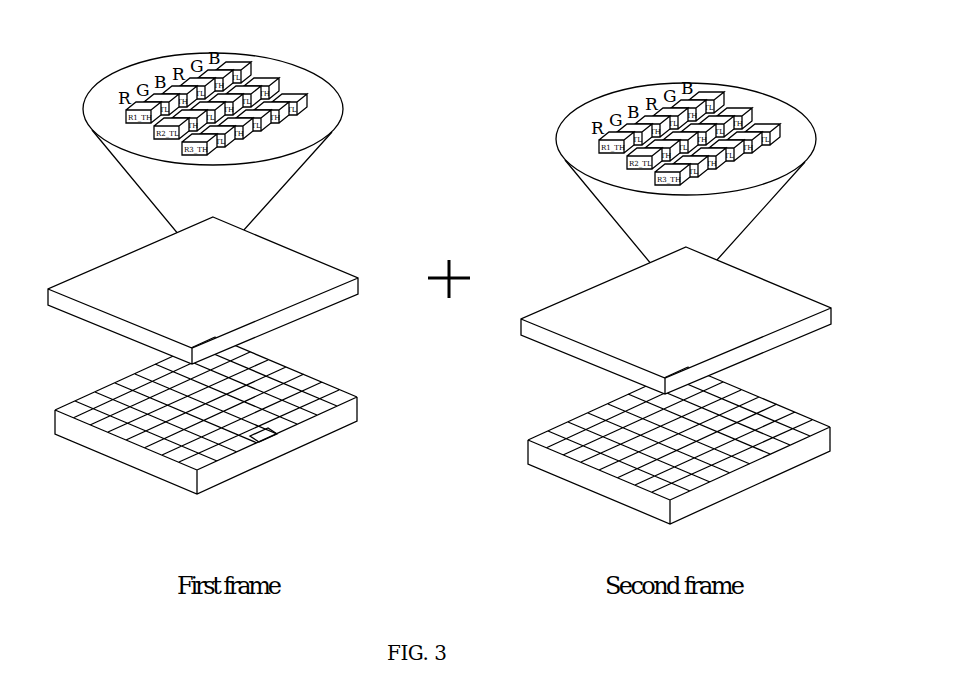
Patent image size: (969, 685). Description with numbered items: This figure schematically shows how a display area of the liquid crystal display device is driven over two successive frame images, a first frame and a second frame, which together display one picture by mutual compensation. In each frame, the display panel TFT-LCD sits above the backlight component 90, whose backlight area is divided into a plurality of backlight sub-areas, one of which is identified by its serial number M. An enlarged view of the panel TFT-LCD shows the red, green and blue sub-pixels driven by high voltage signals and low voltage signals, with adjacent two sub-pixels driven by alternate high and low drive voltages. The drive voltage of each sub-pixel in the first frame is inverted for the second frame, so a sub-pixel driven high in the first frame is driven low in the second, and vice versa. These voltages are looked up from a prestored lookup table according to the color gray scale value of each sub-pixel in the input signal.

The backlight component 90 is at (147, 473).
The serial number of the backlight sub-area M is at (257, 433).
The element TFT-LCD is at (180, 290).